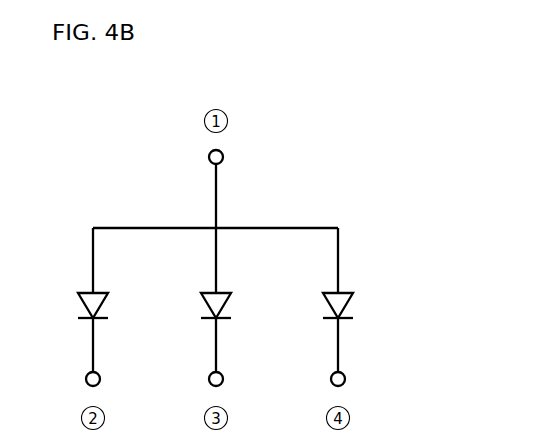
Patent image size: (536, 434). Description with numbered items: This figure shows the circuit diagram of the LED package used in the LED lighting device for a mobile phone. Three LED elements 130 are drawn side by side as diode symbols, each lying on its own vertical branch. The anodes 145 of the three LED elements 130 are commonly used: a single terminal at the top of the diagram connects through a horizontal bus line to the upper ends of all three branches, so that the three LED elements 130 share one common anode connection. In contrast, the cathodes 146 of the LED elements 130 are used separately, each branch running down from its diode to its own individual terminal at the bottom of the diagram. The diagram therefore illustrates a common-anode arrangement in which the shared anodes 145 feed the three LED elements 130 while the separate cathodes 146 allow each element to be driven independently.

The anode 145 is at (223, 157).
The LED element 130 is at (350, 300).
The cathode 146 is at (345, 379).